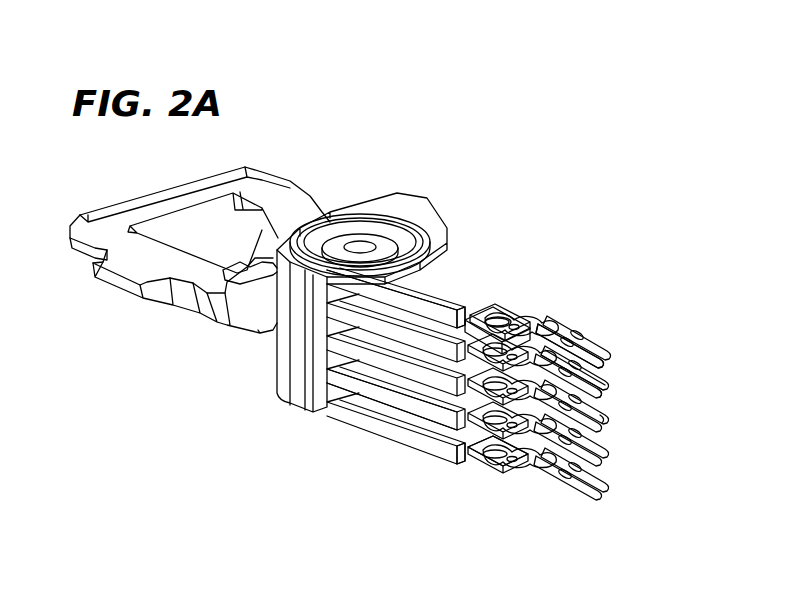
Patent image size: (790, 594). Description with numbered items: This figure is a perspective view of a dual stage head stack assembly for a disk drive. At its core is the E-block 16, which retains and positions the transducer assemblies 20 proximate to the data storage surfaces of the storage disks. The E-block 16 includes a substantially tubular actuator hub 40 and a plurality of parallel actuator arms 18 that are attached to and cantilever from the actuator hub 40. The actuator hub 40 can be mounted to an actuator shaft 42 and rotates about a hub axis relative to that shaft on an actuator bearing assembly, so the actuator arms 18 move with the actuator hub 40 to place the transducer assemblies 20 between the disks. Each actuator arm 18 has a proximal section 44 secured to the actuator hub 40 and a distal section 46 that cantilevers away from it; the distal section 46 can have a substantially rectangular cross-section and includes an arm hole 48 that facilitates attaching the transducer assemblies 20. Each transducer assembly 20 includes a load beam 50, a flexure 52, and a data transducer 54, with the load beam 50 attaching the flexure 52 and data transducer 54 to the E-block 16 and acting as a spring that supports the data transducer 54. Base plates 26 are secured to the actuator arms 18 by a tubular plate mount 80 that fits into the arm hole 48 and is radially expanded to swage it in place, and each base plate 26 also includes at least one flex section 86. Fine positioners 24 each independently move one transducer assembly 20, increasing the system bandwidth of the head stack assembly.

The E-block 16 is at (485, 192).
The actuator arms 18 is at (460, 280).
The transducer assemblies 20 is at (578, 364).
The fine positioners 24 is at (558, 330).
The base plates 26 is at (490, 448).
The actuator hub 40 is at (390, 252).
The actuator shaft 42 is at (358, 247).
The proximal section 44 is at (443, 253).
The distal section 46 is at (505, 320).
The arm hole 48 is at (535, 338).
The load beam 50 is at (580, 372).
The flexure 52 is at (603, 385).
The data transducer 54 is at (608, 408).
The plate mount 80 is at (430, 395).
The flex section 86 is at (550, 350).